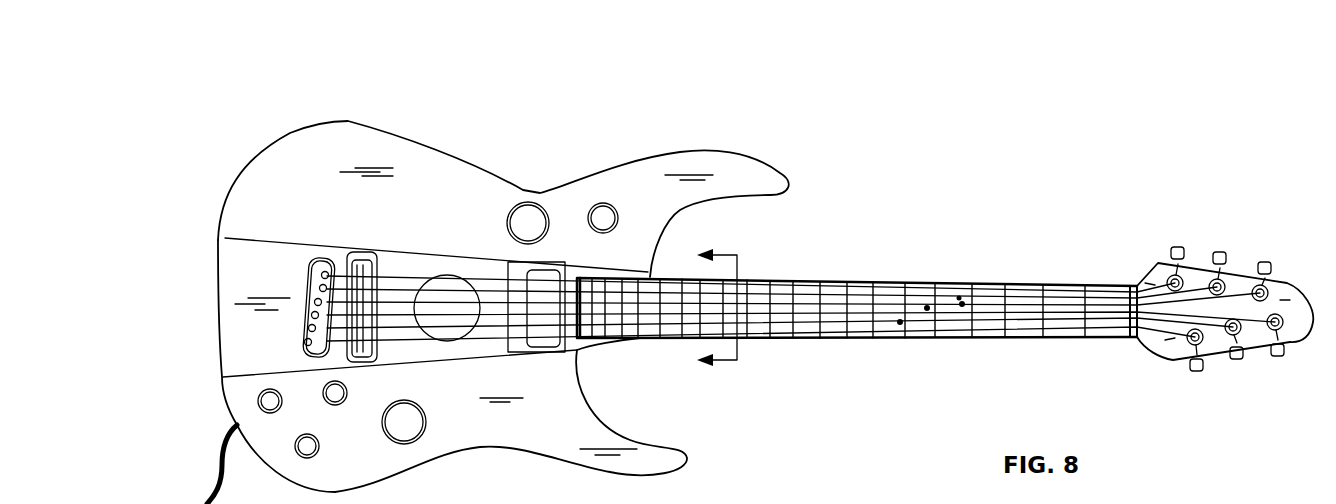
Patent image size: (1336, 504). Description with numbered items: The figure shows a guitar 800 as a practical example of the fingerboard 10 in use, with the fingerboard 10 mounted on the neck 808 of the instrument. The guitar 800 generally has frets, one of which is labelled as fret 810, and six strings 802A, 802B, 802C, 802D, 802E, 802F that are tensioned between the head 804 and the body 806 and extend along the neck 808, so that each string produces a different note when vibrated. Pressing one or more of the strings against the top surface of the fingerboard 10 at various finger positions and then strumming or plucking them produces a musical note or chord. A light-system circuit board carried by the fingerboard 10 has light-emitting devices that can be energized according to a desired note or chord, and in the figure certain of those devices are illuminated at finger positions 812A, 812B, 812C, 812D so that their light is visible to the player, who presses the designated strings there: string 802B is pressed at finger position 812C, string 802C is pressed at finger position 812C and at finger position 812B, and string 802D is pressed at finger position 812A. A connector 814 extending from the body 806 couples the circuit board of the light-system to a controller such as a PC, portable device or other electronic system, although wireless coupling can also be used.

The guitar 800 is at (714, 273).
The string 802A is at (385, 278).
The string 802B is at (420, 287).
The string 802C is at (457, 299).
The string 802D is at (480, 313).
The string 802E is at (517, 323).
The string 802F is at (557, 335).
The head 804 is at (1240, 284).
The body 806 is at (503, 306).
The neck 808 is at (857, 314).
The fret 810 is at (1085, 308).
The illuminated finger position 812A is at (900, 322).
The illuminated finger position 812B is at (927, 308).
The illuminated finger position 812C is at (962, 304).
The illuminated finger position 812D is at (1013, 264).
The fingerboard 10 is at (791, 285).
The connector 814 is at (130, 503).